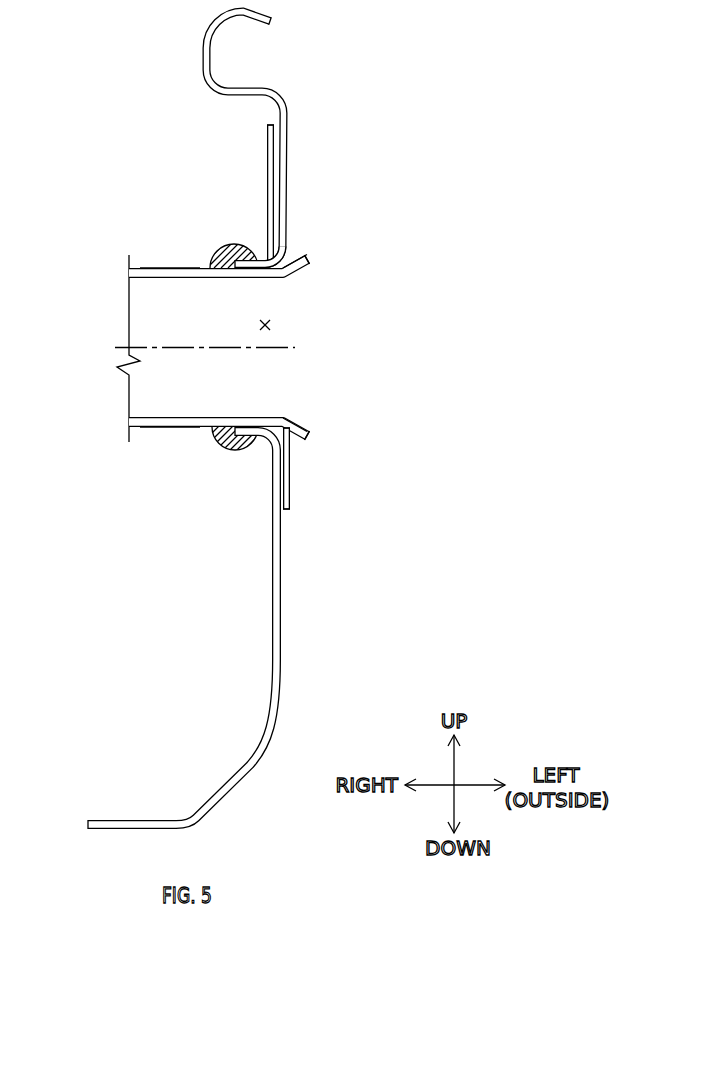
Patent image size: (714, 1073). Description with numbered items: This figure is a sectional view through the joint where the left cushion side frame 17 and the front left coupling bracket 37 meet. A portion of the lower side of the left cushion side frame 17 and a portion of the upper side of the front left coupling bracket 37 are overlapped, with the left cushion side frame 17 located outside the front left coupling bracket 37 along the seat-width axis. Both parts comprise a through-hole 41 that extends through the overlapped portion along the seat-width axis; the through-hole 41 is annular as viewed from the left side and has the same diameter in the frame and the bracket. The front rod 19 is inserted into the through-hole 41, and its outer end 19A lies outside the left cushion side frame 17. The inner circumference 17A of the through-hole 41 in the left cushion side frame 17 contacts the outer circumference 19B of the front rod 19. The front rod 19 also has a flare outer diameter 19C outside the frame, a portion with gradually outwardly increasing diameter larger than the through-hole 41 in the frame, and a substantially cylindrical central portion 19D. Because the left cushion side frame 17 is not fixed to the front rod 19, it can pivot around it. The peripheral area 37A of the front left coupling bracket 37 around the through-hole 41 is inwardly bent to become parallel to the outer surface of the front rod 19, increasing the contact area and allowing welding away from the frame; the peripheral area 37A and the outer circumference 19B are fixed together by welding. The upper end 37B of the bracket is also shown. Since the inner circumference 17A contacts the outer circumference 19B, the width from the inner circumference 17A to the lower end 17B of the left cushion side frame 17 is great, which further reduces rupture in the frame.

The left cushion side frame 17 is at (277, 87).
The inner circumference 17A is at (287, 240).
The lower end 17B is at (288, 513).
The front rod 19 is at (148, 268).
The outer end 19A is at (306, 261).
The outer circumference 19B is at (183, 268).
The flare outer diameter 19C is at (300, 273).
The central portion 19D is at (137, 432).
The front left coupling bracket 37 is at (266, 143).
The peripheral area 37A is at (253, 252).
The upper end of second panel member 37B is at (265, 160).
The through-hole 41 is at (272, 322).